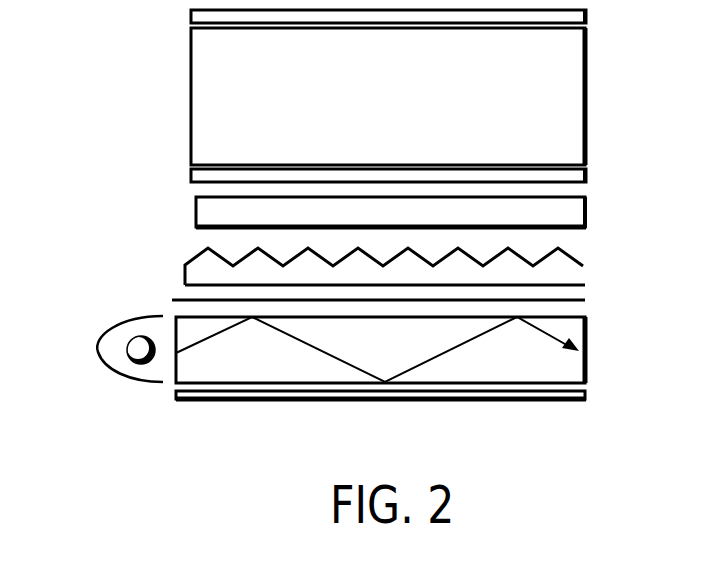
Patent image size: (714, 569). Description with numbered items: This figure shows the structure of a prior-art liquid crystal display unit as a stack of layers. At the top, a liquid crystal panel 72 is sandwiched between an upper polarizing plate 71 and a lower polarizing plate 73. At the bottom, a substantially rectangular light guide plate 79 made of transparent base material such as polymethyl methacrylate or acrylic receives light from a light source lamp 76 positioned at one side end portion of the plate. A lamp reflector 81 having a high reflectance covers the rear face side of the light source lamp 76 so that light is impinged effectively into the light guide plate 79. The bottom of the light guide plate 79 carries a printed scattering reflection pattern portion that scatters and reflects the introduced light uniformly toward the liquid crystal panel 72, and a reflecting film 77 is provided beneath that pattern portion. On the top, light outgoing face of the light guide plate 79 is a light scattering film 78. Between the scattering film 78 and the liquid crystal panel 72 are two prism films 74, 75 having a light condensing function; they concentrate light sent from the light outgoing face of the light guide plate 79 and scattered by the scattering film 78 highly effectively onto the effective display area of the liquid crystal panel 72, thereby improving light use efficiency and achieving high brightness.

The polarizing plate 71 is at (202, 18).
The liquid crystal panel 72 is at (198, 91).
The polarizing plate 73 is at (197, 172).
The prism film 74 is at (200, 211).
The prism film 75 is at (185, 271).
The light scattering film 78 is at (175, 300).
The light guide plate 79 is at (260, 375).
The reflecting film 77 is at (176, 394).
The light source lamp 76 is at (138, 350).
The lamp reflector 81 is at (160, 382).